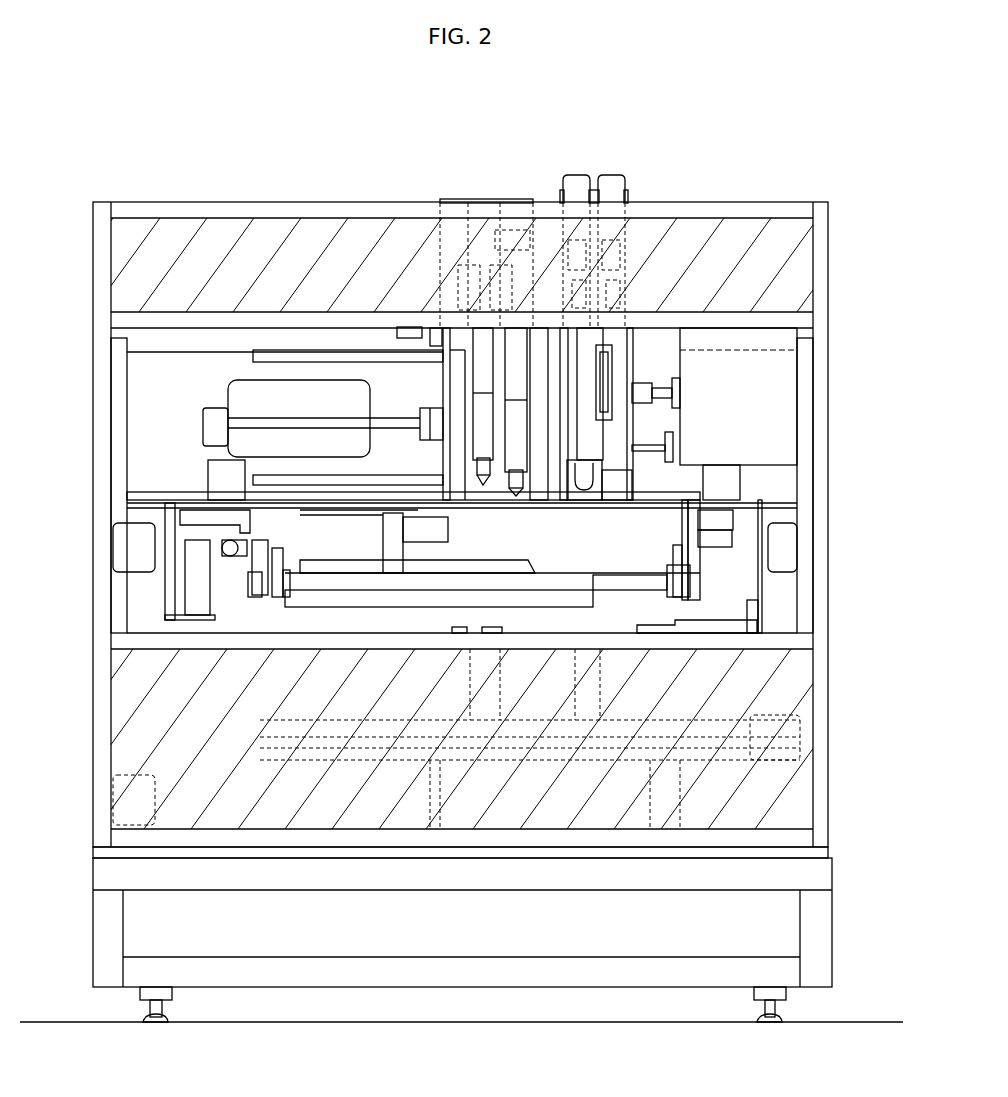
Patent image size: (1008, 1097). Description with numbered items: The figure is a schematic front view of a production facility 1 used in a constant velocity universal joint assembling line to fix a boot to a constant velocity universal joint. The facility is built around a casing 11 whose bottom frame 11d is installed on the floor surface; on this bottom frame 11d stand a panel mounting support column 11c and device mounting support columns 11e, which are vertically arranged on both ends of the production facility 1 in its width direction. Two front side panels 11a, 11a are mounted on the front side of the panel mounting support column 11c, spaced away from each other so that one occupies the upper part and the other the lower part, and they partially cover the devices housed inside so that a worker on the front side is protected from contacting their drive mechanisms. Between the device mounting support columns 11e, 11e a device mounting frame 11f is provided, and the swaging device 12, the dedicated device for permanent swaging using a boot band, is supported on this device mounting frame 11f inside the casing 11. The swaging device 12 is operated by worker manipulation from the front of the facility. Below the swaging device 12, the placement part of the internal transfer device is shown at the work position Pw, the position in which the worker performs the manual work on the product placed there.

The production facility 1 is at (790, 185).
The casing 11 is at (80, 215).
The front side panels 11a is at (785, 278).
The panel mounting support column 11c is at (105, 328).
The bottom frame 11d is at (818, 930).
The device mounting support columns 11e is at (150, 610).
The device mounting frame 11f is at (150, 436).
The swaging device 12 is at (500, 195).
The work position Pw is at (527, 628).